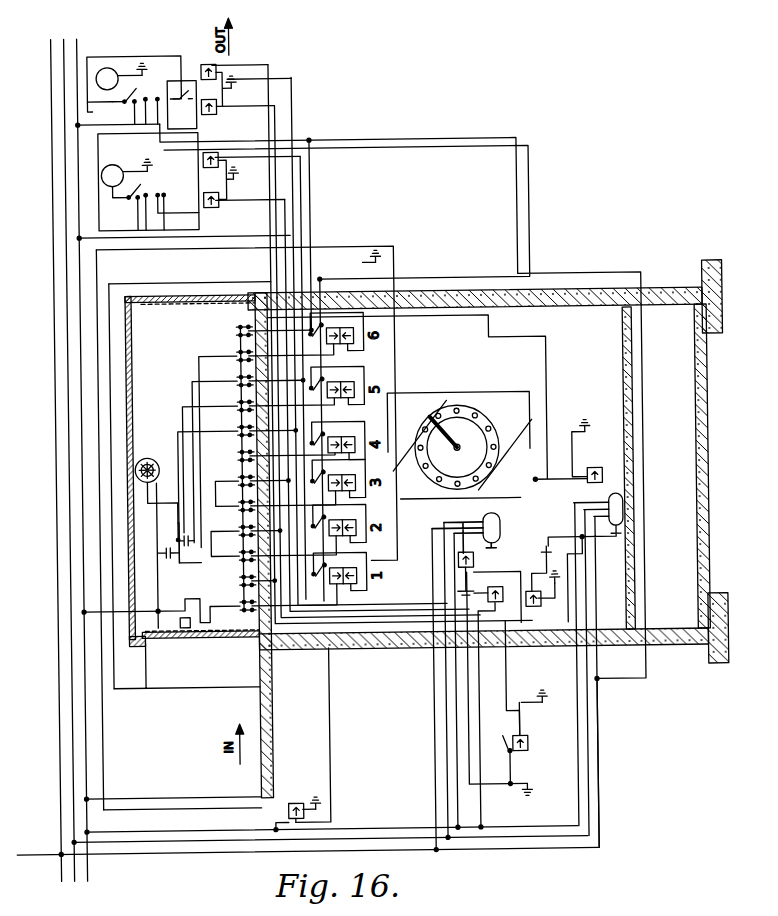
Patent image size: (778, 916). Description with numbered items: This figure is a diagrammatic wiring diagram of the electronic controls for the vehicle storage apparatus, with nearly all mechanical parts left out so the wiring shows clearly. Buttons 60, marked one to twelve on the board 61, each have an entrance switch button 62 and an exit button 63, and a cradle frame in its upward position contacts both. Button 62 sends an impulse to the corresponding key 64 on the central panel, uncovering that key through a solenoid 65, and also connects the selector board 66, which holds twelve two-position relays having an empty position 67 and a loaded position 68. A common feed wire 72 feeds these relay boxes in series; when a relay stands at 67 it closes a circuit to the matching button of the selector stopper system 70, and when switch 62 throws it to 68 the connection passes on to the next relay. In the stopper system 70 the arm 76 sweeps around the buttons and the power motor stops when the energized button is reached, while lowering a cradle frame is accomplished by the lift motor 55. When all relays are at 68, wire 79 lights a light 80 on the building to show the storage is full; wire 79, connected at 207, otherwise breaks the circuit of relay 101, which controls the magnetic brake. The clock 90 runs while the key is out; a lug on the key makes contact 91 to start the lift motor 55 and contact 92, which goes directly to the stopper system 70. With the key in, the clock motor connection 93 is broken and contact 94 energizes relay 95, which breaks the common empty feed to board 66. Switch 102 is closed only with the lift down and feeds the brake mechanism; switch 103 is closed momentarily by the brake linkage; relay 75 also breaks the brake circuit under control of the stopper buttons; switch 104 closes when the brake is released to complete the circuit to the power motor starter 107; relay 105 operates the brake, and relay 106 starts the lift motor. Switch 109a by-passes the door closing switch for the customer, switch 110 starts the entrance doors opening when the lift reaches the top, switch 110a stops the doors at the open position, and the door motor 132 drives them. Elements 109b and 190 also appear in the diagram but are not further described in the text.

The lift motor 55 is at (622, 510).
The buttons 60 is at (209, 565).
The board 61 is at (234, 398).
The entrance switch button 62 is at (255, 662).
The exit button 63 is at (262, 136).
The key 64 is at (207, 186).
The solenoid 65 is at (220, 204).
The selector board 66 is at (382, 586).
The relay empty position contact 67 is at (316, 570).
The relay loaded position contact 68 is at (330, 534).
The selector stopper system 70 is at (467, 406).
The common feed wire 72 is at (324, 712).
The relay 75 is at (525, 745).
The arm 76 is at (459, 412).
The wire 79 is at (160, 280).
The light 80 is at (140, 641).
The clock 90 is at (114, 160).
The key contact 91 is at (172, 90).
The key contact 92 is at (132, 72).
The clock motor connection 93 is at (160, 112).
The contact 94 is at (100, 110).
The relay 95 is at (291, 801).
The relay 101 is at (574, 672).
The lift-down switch 102 is at (543, 546).
The brake linkage switch 103 is at (468, 672).
The brake released switch 104 is at (457, 562).
The brake relay 105 is at (501, 594).
The lift motor relay 106 is at (595, 449).
The power motor starter 107 is at (460, 528).
The door by-pass switch 109a is at (163, 491).
The capacitor 109b is at (155, 556).
The lift top switch 110 is at (242, 640).
The door open stop switch 110a is at (188, 540).
The door motor 132 is at (148, 455).
The relay 190 is at (178, 618).
The wire connection 207 is at (426, 277).